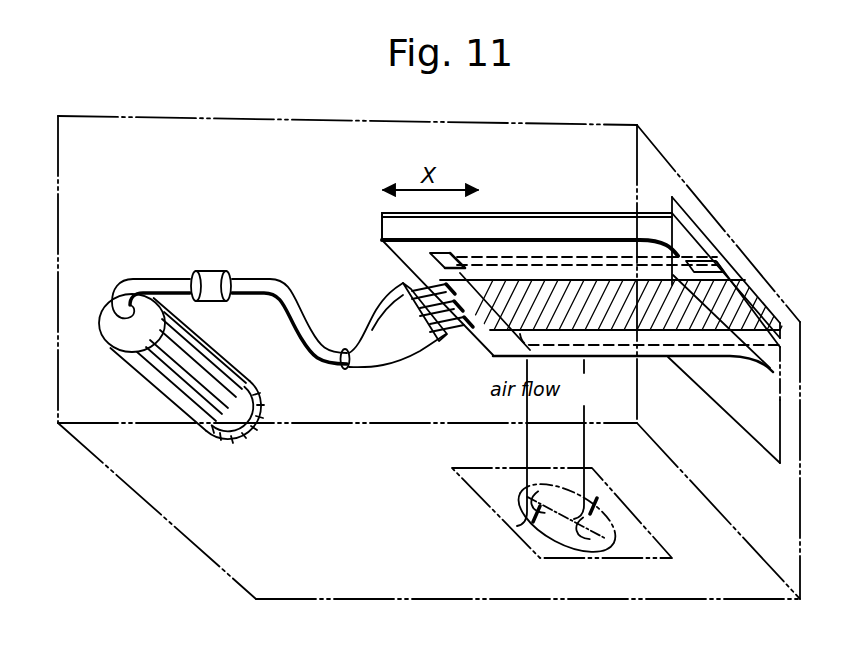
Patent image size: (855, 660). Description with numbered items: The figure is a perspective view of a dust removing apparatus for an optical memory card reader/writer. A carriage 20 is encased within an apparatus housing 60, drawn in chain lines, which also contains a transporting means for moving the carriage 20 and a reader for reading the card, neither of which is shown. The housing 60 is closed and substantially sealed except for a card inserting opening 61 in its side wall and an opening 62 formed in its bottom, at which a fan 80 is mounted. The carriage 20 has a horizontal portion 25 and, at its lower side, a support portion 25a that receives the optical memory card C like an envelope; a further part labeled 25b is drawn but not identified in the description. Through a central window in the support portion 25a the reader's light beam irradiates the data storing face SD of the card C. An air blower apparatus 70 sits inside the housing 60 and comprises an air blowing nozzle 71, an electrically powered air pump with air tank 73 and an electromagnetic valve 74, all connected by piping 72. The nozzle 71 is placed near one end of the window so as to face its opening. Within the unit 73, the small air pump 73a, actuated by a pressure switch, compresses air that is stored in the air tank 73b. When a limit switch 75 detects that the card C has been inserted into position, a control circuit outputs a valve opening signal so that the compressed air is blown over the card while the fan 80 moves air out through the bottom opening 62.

The carriage 20 is at (572, 222).
The horizontal portion 25 is at (378, 226).
The support portion 25a is at (388, 276).
The lower guide plate 25b is at (486, 337).
The apparatus housing 60 is at (602, 124).
The card inserting opening 61 is at (708, 226).
The fan mounting opening 62 is at (545, 560).
The air blower apparatus 70 is at (292, 360).
The air blowing nozzle 71 is at (400, 348).
The piping 72 is at (262, 280).
The electrically powered air pump with air tank 73 is at (172, 385).
The air pump 73a is at (215, 430).
The air tank 73b is at (132, 366).
The electromagnetic valve 74 is at (208, 275).
The limit switch 75 is at (452, 257).
The fan 80 is at (598, 540).
The optical memory card C is at (742, 300).
The data storing face SD is at (638, 352).